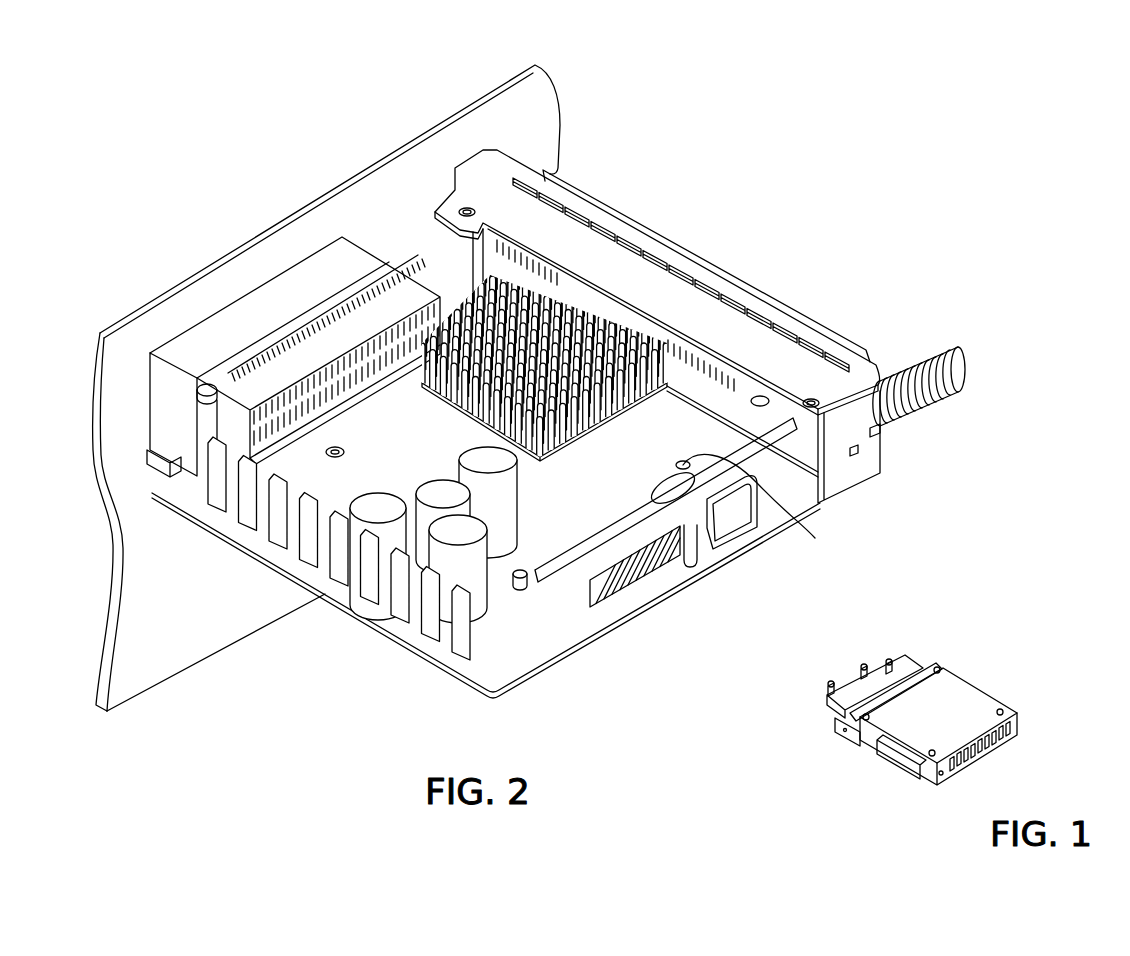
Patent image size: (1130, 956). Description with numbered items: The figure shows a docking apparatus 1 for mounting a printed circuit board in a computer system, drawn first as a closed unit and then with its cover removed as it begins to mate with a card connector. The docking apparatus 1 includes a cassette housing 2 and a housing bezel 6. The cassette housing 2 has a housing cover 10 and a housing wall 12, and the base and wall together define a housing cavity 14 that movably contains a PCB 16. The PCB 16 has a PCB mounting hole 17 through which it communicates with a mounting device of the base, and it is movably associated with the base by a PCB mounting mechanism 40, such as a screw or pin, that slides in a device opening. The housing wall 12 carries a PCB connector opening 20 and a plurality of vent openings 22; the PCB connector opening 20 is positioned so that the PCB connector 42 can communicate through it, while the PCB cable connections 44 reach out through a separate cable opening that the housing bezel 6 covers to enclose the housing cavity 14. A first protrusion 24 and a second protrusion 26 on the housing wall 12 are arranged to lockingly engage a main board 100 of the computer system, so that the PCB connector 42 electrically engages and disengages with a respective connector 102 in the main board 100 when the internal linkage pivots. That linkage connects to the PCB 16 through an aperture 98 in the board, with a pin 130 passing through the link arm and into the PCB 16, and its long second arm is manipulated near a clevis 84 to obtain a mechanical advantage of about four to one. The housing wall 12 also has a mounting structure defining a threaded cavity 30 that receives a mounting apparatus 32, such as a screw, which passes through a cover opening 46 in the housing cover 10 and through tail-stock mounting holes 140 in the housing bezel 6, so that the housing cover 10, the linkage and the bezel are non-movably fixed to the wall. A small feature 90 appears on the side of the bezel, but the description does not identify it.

In FIG. 2, the docking apparatus 1 is at (380, 648).
In FIG. 1, the docking apparatus 1 is at (972, 672).
In FIG. 2, the cassette housing 2 is at (460, 673).
In FIG. 1, the cassette housing 2 is at (1017, 714).
In FIG. 2, the housing bezel 6 is at (858, 356).
In FIG. 1, the housing bezel 6 is at (922, 662).
In FIG. 1, the housing cover 10 is at (948, 728).
In FIG. 2, the housing wall 12 is at (566, 627).
In FIG. 2, the housing cavity 14 is at (672, 405).
In FIG. 2, the PCB 16 is at (406, 447).
In FIG. 2, the PCB mounting hole 17 is at (815, 538).
In FIG. 2, the PCB connector opening 20 is at (372, 240).
In FIG. 2, the vent openings 22 is at (348, 550).
In FIG. 1, the first protrusion 24 is at (941, 778).
In FIG. 1, the second protrusion 26 is at (845, 739).
In FIG. 2, the threaded cavity 30 is at (168, 356).
In FIG. 1, the mounting apparatus 32 is at (1003, 710).
In FIG. 2, the PCB mounting mechanism 40 is at (703, 530).
In FIG. 2, the PCB connector 42 is at (237, 377).
In FIG. 1, the PCB connector 42 is at (898, 760).
In FIG. 1, the PCB cable connections 44 is at (838, 688).
In FIG. 1, the cover opening 46 is at (962, 757).
In FIG. 2, the clevis 84 is at (690, 568).
In FIG. 2, the slot 90 is at (873, 437).
In FIG. 2, the aperture 98 is at (333, 457).
In FIG. 2, the main board 100 is at (168, 646).
In FIG. 2, the connector 102 is at (266, 333).
In FIG. 2, the pin 130 is at (335, 460).
In FIG. 2, the tail-stock mounting holes 140 is at (467, 207).
In FIG. 1, the tail-stock mounting holes 140 is at (940, 668).